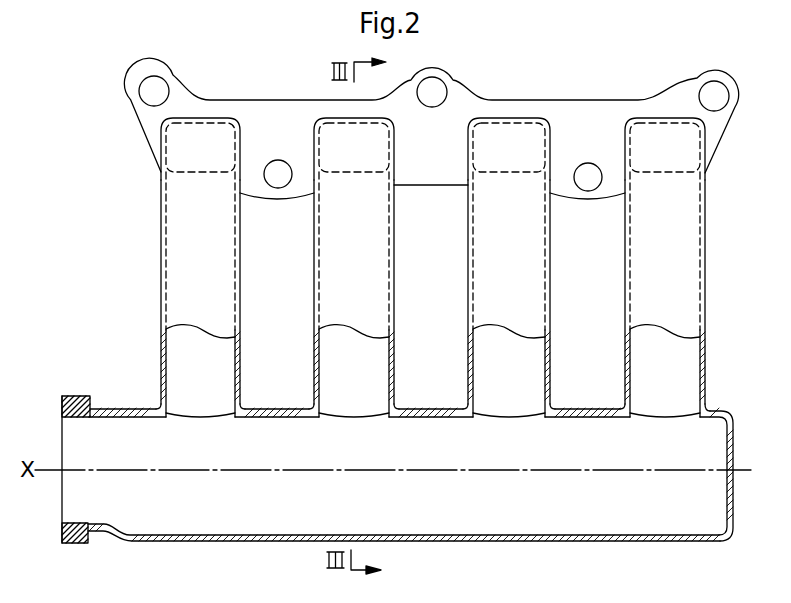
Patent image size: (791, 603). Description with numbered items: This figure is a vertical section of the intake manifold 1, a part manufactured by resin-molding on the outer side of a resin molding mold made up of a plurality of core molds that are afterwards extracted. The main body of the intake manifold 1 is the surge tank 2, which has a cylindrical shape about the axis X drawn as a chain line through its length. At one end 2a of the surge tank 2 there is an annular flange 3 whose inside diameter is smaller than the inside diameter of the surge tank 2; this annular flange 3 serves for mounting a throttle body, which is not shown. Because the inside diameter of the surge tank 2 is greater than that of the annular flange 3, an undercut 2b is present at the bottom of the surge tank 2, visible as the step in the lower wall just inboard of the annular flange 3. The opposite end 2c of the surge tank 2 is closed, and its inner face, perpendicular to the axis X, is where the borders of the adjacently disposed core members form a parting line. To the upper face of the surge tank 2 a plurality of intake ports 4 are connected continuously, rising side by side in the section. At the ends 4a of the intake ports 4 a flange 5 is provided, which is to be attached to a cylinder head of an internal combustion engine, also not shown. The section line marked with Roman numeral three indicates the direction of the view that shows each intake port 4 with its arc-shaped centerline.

The intake manifold 1 is at (97, 158).
The surge tank 2 is at (636, 543).
The end of the surge tank 2a is at (127, 407).
The undercut 2b is at (128, 526).
The end of the surge tank 2c is at (735, 497).
The annular flange 3 is at (72, 396).
The intake ports 4 is at (314, 297).
The ends of the intake ports 4a is at (210, 117).
The flange 5 is at (568, 106).